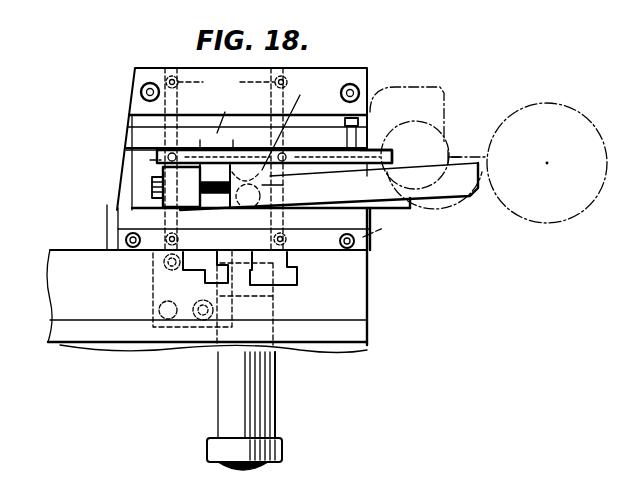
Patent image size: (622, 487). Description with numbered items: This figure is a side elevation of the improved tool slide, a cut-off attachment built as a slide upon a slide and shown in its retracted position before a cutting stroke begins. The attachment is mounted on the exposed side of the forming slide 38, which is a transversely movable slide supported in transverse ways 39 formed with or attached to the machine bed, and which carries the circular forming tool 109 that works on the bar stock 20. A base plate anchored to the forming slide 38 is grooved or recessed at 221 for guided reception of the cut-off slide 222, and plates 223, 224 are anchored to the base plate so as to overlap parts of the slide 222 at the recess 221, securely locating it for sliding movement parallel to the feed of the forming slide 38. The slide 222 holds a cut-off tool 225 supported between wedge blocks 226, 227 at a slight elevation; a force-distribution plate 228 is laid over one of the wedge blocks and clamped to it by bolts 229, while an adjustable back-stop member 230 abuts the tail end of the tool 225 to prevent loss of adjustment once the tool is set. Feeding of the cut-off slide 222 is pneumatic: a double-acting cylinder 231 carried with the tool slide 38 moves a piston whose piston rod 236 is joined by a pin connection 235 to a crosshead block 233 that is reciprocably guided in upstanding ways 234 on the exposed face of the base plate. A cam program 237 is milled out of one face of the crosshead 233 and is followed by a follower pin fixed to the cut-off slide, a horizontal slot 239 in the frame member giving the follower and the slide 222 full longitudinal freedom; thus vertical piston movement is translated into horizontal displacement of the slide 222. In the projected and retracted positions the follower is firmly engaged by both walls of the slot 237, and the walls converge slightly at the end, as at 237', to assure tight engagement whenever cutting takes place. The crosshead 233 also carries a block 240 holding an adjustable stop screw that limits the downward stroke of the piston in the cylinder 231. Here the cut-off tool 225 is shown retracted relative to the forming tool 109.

The plate 223 is at (138, 76).
The upstanding ways 234 is at (226, 83).
The converging walls of the cam slot 237' is at (229, 113).
The crosshead block 233 is at (295, 126).
The recess 221 is at (126, 138).
The bolts 229 is at (346, 120).
The wedge block 226 is at (355, 132).
The horizontal slot 239 is at (217, 138).
The force-distribution plate 228 is at (380, 152).
The forming tool 109 is at (440, 92).
The stock 20 is at (567, 105).
The cut-off tool 225 is at (463, 172).
The adjustable back-stop member 230 is at (150, 160).
The block 240 is at (271, 196).
The cut-off slide 222 is at (140, 182).
The cam program 237 is at (291, 187).
The piston rod 236 is at (288, 200).
The pin connection 235 is at (282, 217).
The plate 224 is at (118, 237).
The wedge block 227 is at (385, 227).
The forming slide 38 is at (353, 283).
The transverse ways 39 is at (358, 333).
The double-acting cylinder 231 is at (222, 393).